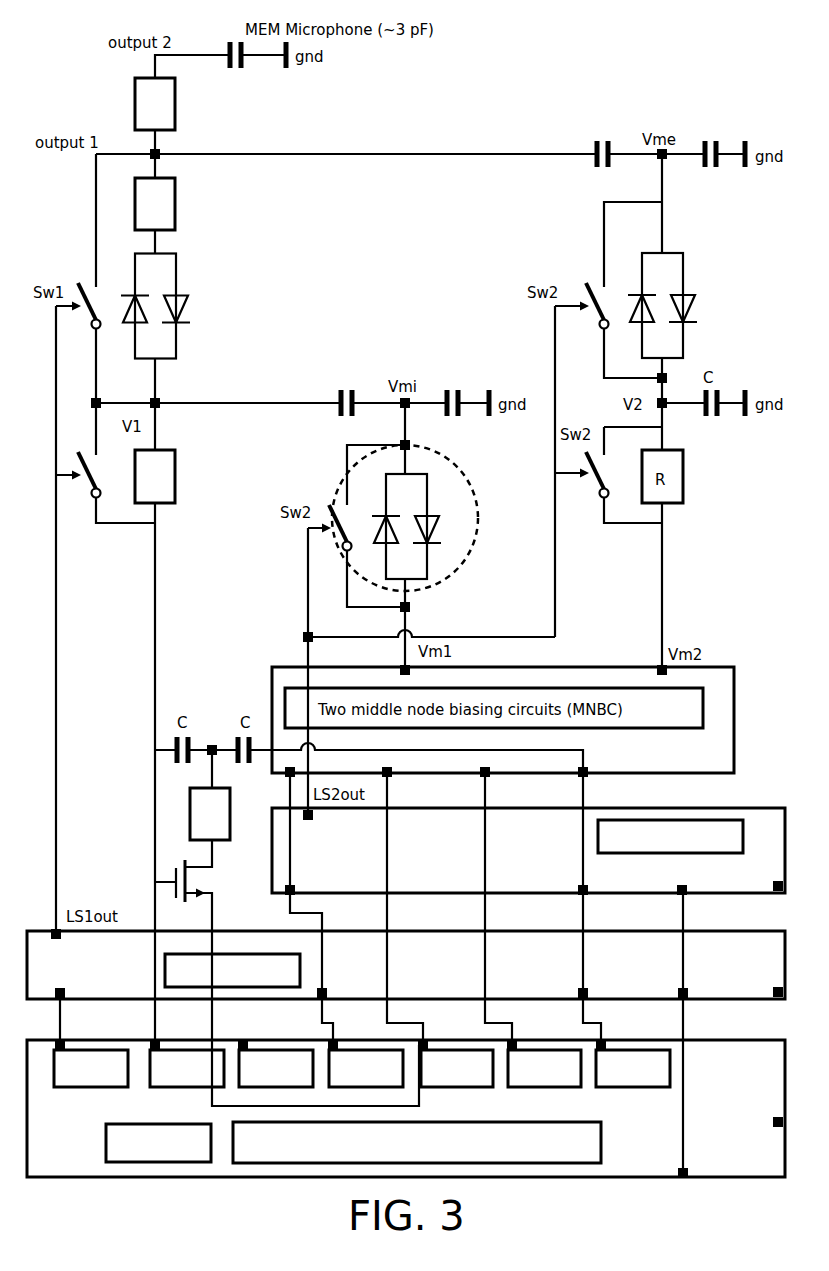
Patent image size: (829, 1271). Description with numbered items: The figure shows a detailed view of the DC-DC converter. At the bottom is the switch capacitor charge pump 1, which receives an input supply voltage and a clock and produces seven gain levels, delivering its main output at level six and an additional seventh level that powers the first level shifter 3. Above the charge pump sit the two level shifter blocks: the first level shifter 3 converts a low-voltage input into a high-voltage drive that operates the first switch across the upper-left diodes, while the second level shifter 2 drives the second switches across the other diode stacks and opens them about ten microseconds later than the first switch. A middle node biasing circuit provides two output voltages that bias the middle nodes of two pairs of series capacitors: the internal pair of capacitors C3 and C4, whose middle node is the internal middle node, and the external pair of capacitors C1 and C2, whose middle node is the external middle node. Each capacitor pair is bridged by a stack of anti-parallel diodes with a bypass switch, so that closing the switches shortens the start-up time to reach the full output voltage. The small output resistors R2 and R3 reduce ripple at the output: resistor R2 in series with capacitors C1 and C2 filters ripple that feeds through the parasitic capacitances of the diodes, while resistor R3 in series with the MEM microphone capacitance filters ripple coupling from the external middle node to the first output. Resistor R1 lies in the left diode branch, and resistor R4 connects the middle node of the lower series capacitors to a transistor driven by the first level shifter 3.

The switch capacitor charge pump (SCCP) 1 is at (406, 1108).
The level shifter 2 is at (528, 850).
The level shifter 1 3 is at (406, 965).
The resistor R1 is at (155, 476).
The small output resistor R2 is at (155, 204).
The small output resistor R3 is at (155, 104).
The resistor R4 is at (210, 814).
The capacitor C1 is at (600, 143).
The capacitor C2 is at (708, 143).
The capacitor C3 is at (343, 392).
The capacitor C4 is at (450, 392).